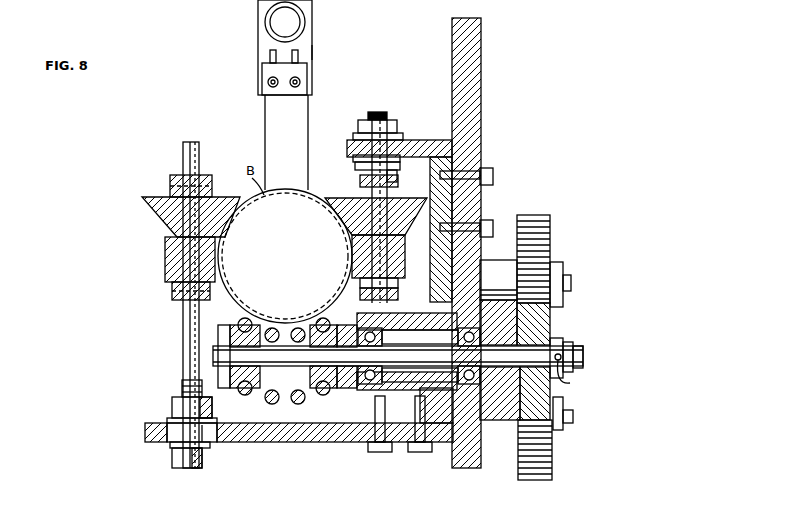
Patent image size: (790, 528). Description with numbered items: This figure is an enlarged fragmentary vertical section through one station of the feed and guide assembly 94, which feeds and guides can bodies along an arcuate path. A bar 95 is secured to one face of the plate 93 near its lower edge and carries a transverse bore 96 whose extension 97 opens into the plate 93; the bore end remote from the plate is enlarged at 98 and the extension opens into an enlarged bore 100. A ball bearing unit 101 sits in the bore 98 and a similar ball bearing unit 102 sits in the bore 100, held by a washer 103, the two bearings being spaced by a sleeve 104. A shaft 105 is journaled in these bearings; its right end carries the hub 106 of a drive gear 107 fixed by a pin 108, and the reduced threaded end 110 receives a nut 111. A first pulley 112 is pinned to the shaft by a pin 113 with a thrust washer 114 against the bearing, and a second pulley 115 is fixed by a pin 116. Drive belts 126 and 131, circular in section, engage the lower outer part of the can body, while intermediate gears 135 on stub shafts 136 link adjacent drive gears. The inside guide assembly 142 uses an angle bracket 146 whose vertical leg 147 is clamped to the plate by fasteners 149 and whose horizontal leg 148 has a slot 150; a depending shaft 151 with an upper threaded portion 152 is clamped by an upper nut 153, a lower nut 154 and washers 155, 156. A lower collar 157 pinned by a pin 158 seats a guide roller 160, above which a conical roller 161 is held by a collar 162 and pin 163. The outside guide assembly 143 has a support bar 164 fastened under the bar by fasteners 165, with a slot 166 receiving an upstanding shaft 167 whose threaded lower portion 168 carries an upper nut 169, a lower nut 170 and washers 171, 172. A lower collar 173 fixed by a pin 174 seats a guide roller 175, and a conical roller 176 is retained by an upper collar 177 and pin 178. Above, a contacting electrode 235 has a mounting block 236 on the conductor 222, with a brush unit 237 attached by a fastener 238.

The plate 93 is at (476, 85).
The feed and guide assembly 94 is at (147, 196).
The bar 95 is at (445, 443).
The transverse bore 96 is at (408, 322).
The bore extension 97 is at (462, 312).
The enlarged bore end 98 is at (362, 395).
The enlarged bore 100 is at (462, 400).
The ball bearing unit 101 is at (348, 316).
The ball bearing unit 102 is at (466, 332).
The washer 103 is at (478, 388).
The sleeve 104 is at (388, 388).
The shaft 105 is at (213, 357).
The hub 106 is at (562, 340).
The drive gear 107 is at (548, 318).
The pin 108 is at (568, 372).
The reduced threaded end 110 is at (584, 352).
The nut 111 is at (584, 362).
The first pulley 112 is at (312, 375).
The pin 113 is at (345, 344).
The thrust washer 114 is at (358, 362).
The second pulley 115 is at (222, 388).
The pin 116 is at (233, 325).
The drive belt 126 is at (246, 396).
The drive belt 131 is at (298, 412).
The intermediate gear 135 is at (552, 230).
The stub shaft 136 is at (570, 282).
The inside guide assembly 142 is at (400, 112).
The outside guide assembly 143 is at (160, 260).
The angle bracket 146 is at (448, 128).
The vertical leg 147 is at (433, 229).
The horizontal leg 148 is at (410, 140).
The fastener 149 is at (490, 170).
The slot 150 is at (392, 162).
The shaft 151 is at (340, 232).
The upper threaded portion 152 is at (378, 112).
The upper nut 153 is at (362, 122).
The lower nut 154 is at (358, 167).
The washer 155 is at (355, 136).
The washer 156 is at (355, 158).
The lower collar 157 is at (398, 295).
The pin 158 is at (398, 284).
The guide roller 160 is at (395, 262).
The conical roller 161 is at (340, 218).
The collar 162 is at (340, 212).
The pin 163 is at (360, 180).
The support bar 164 is at (342, 443).
The fastener 165 is at (420, 452).
The slot 166 is at (205, 432).
The upstanding shaft 167 is at (184, 148).
The threaded lower portion 168 is at (182, 392).
The upper nut 169 is at (172, 405).
The lower nut 170 is at (178, 462).
The washer 171 is at (168, 420).
The washer 172 is at (165, 443).
The lower collar 173 is at (178, 300).
The pin 174 is at (172, 292).
The guide roller 175 is at (168, 270).
The conical roller 176 is at (160, 207).
The upper collar 177 is at (172, 184).
The pin 178 is at (212, 190).
The conductor 222 is at (303, 20).
The contacting electrode 235 is at (258, 68).
The mounting block 236 is at (312, 60).
The brush unit 237 is at (272, 128).
The fastener 238 is at (297, 80).